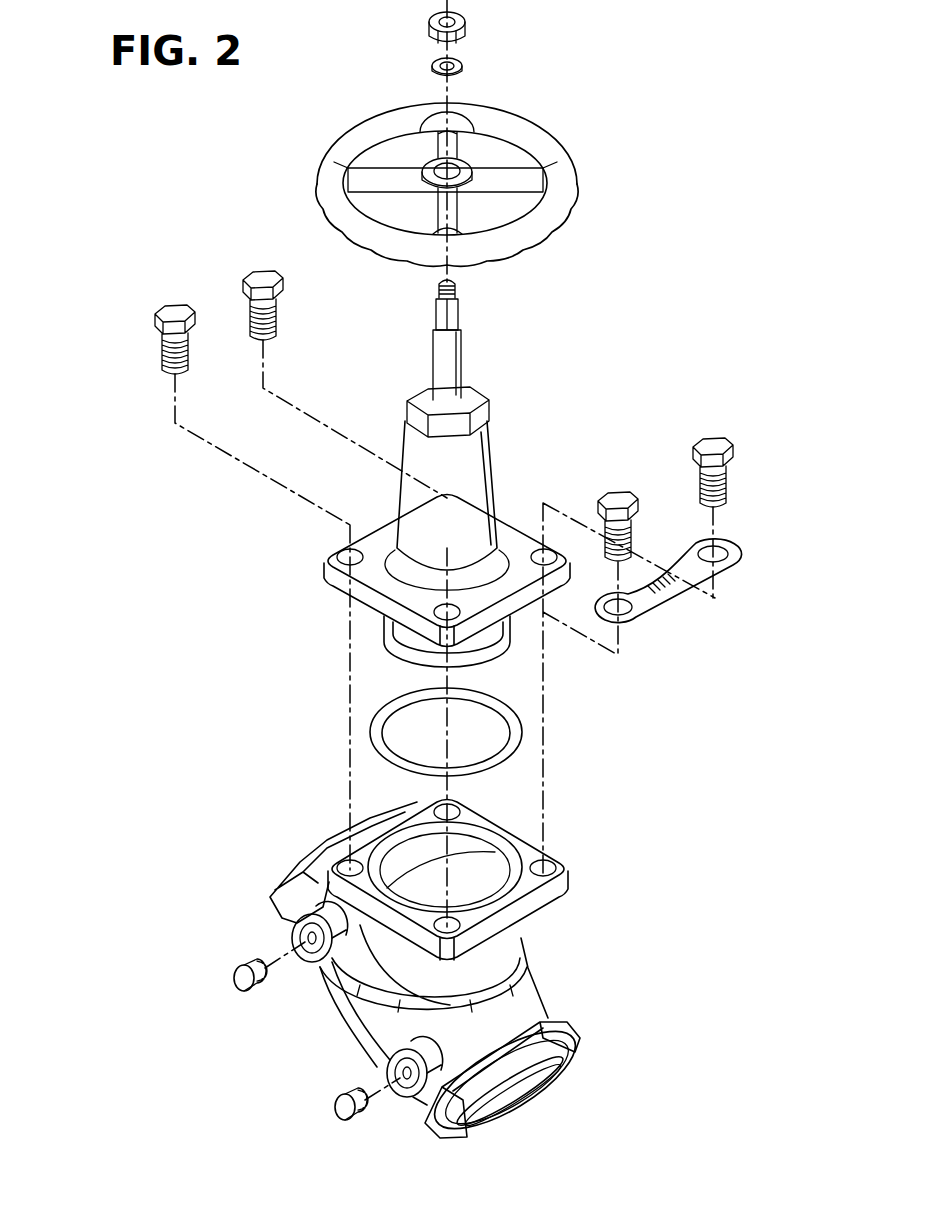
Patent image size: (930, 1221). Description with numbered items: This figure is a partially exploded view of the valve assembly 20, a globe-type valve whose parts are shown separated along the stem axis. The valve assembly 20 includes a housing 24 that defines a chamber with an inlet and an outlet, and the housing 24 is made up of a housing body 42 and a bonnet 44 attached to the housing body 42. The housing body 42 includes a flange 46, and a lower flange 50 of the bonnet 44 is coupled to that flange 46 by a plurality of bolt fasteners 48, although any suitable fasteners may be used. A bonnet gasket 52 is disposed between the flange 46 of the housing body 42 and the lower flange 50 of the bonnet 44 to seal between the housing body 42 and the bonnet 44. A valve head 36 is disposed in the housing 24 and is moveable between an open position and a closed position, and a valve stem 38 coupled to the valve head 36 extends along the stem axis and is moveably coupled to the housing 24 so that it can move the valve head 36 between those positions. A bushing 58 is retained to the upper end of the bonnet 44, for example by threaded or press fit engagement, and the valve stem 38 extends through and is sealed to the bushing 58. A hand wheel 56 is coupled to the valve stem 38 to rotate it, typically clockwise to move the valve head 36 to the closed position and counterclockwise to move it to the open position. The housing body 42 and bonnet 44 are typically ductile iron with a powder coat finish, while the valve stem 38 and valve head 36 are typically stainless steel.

The valve assembly 20 is at (244, 811).
The housing 24 is at (264, 1026).
The valve head 36 is at (388, 634).
The valve stem 38 is at (451, 362).
The housing body 42 is at (360, 1010).
The bonnet 44 is at (487, 486).
The flange 46 is at (553, 890).
The bolt fasteners 48 is at (174, 312).
The lower flange 50 is at (330, 578).
The bonnet gasket 52 is at (514, 722).
The hand wheel 56 is at (534, 137).
The bushing 58 is at (472, 408).